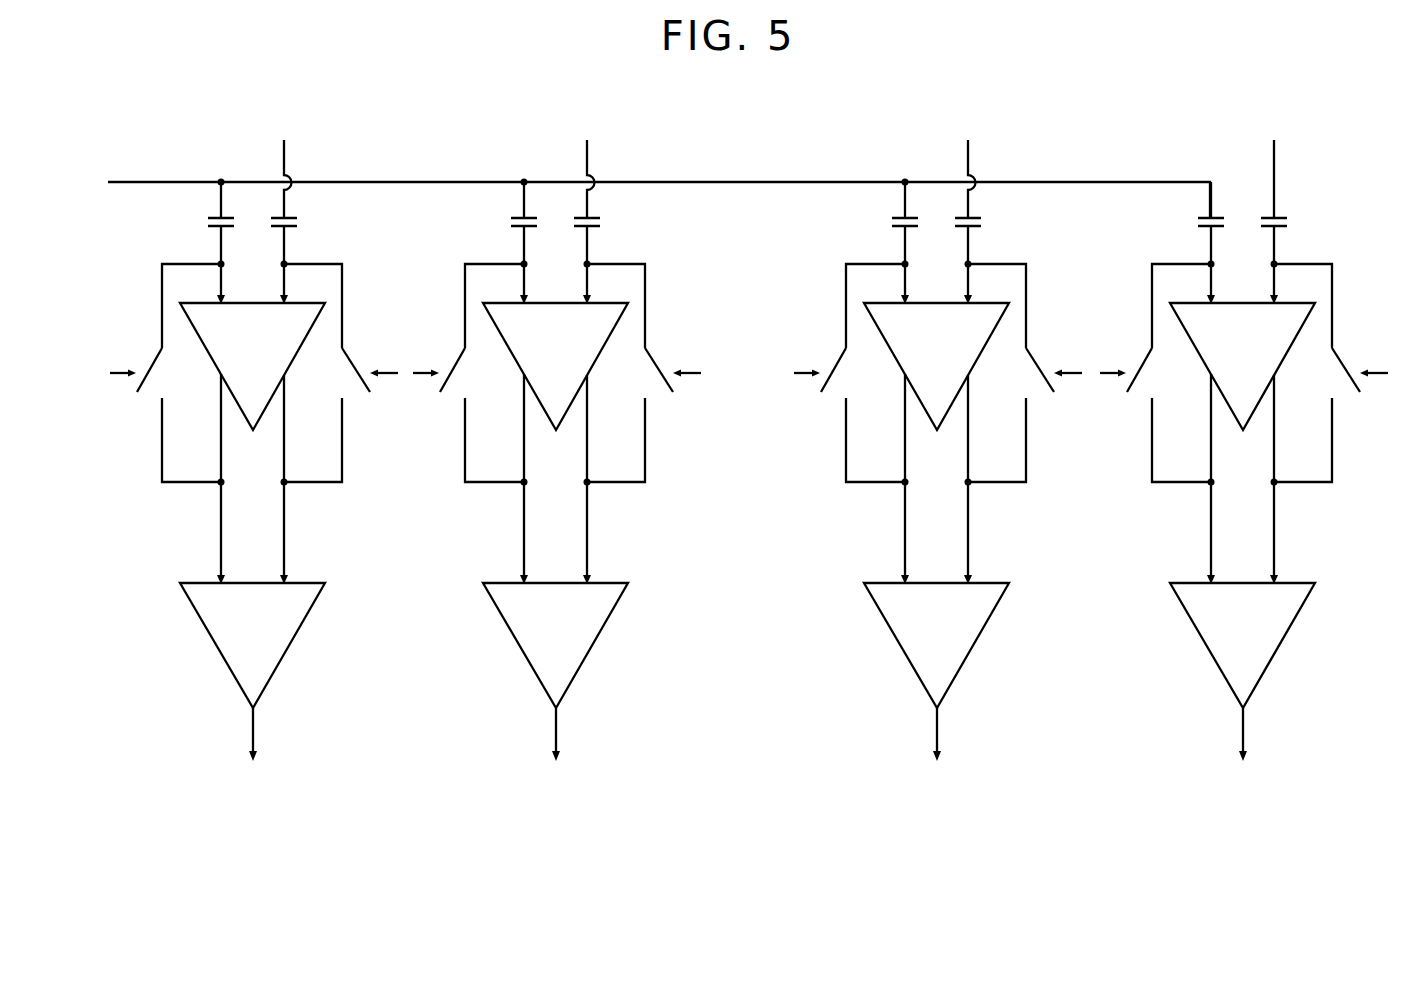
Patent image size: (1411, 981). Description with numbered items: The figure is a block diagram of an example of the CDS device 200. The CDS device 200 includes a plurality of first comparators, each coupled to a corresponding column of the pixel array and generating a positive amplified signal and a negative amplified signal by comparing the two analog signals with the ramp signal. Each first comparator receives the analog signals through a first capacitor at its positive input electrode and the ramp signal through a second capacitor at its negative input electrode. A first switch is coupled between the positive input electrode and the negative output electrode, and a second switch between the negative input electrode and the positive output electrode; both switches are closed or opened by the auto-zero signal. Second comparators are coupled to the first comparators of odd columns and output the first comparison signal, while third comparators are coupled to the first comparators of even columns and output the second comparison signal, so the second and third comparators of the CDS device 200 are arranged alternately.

The CDS device 200 is at (755, 113).